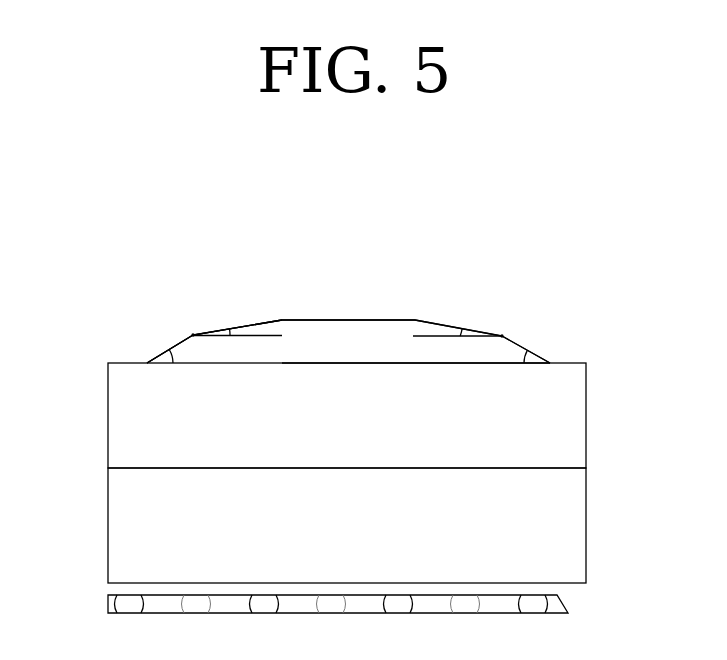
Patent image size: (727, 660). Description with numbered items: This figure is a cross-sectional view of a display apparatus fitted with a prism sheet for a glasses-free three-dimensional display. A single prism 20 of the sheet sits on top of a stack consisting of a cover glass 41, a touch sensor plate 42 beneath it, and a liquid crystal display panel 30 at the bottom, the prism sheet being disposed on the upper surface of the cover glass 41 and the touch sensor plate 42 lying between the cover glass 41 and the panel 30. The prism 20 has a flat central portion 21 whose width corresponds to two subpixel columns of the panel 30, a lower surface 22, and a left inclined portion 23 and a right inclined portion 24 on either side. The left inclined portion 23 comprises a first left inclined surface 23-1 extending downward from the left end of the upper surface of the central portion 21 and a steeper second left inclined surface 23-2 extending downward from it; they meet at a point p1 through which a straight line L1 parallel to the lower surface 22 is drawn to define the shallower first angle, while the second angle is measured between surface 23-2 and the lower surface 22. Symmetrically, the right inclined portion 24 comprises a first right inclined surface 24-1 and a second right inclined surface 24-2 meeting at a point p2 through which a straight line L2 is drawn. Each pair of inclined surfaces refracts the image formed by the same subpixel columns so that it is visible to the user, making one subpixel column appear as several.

The prism 20 is at (494, 312).
The central portion 21 is at (345, 320).
The lower surface 22 is at (347, 364).
The left inclined portion 23 is at (210, 348).
The first left inclined surface 23-1 is at (212, 334).
The second left inclined surface 23-2 is at (165, 352).
The right inclined portion 24 is at (480, 348).
The first right inclined surface 24-1 is at (490, 332).
The second right inclined surface 24-2 is at (525, 349).
The liquid crystal display panel 30 is at (568, 598).
The cover glass 41 is at (586, 412).
The touch sensor plate 42 is at (586, 523).
The straight line L1 is at (268, 334).
The straight line L2 is at (425, 335).
The point p1 is at (192, 335).
The point p2 is at (503, 336).